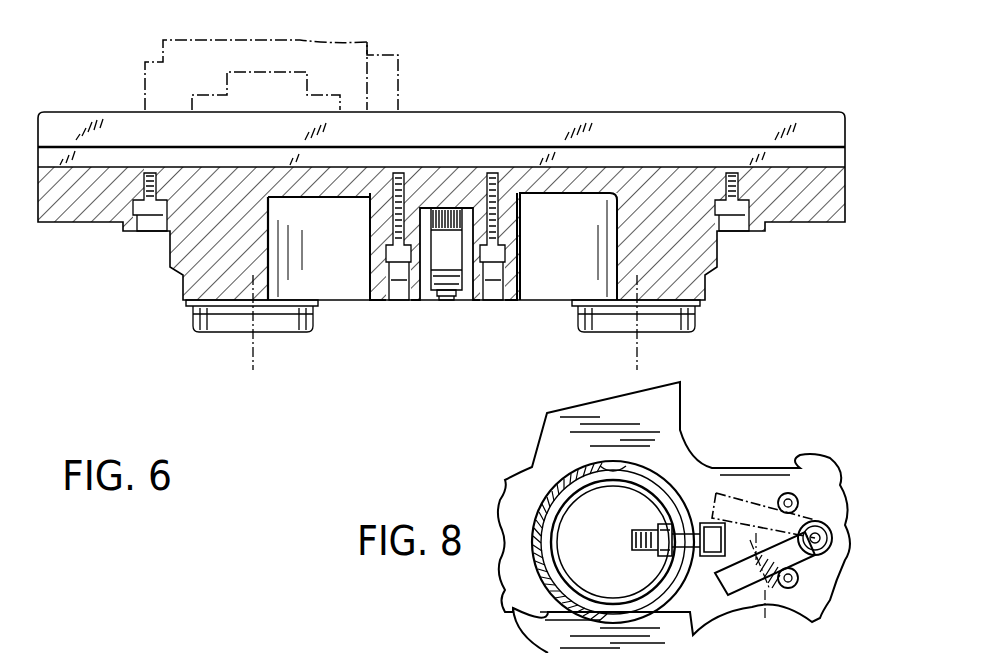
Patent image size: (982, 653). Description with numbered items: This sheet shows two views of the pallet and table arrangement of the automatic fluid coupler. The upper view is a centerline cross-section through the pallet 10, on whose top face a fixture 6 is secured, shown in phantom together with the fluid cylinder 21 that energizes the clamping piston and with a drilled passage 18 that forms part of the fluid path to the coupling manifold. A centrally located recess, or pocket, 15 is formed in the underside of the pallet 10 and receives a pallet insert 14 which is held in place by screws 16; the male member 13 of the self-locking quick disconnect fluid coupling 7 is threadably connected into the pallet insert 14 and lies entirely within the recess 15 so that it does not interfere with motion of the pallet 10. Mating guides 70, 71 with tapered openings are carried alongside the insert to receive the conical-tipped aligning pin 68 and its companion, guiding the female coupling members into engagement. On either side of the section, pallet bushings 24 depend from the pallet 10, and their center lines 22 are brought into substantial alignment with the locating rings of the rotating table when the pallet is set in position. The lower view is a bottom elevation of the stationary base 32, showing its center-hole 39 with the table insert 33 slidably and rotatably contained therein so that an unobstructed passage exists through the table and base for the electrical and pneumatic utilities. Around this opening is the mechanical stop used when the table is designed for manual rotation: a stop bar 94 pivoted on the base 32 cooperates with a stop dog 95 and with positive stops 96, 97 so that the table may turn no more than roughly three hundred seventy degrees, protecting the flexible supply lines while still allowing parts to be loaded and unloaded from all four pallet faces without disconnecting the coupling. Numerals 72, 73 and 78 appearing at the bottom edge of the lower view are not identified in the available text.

In FIG. 6, the fixture 6 is at (398, 70).
In FIG. 6, the pallet 10 is at (626, 111).
In FIG. 6, the male member 13 is at (442, 302).
In FIG. 6, the pallet insert 14 is at (466, 198).
In FIG. 6, the recess 15 is at (384, 195).
In FIG. 6, the screws 16 is at (436, 185).
In FIG. 6, the drilled passage 18 is at (262, 40).
In FIG. 6, the fluid cylinder 21 is at (238, 70).
In FIG. 6, the center lines 22 is at (253, 362).
In FIG. 6, the pallet bushings 24 is at (210, 334).
In FIG. 8, the stationary base 32 is at (718, 468).
In FIG. 8, the table insert 33 is at (675, 600).
In FIG. 8, the center-hole 39 is at (618, 467).
In FIG. 6, the mating guide 70 is at (398, 302).
In FIG. 6, the mating guide 71 is at (492, 302).
In FIG. 8, the stop bar 94 is at (762, 590).
In FIG. 8, the stop dog 95 is at (708, 523).
In FIG. 8, the positive stop 96 is at (793, 493).
In FIG. 8, the positive stop 97 is at (805, 600).
In FIG. 8, the aligning pin 68 is at (374, 643).
In FIG. 8, the member 72 is at (499, 643).
In FIG. 8, the member 73 is at (434, 643).
In FIG. 8, the member 78 is at (452, 652).
In FIG. 8, the fluid coupling 7 is at (310, 650).